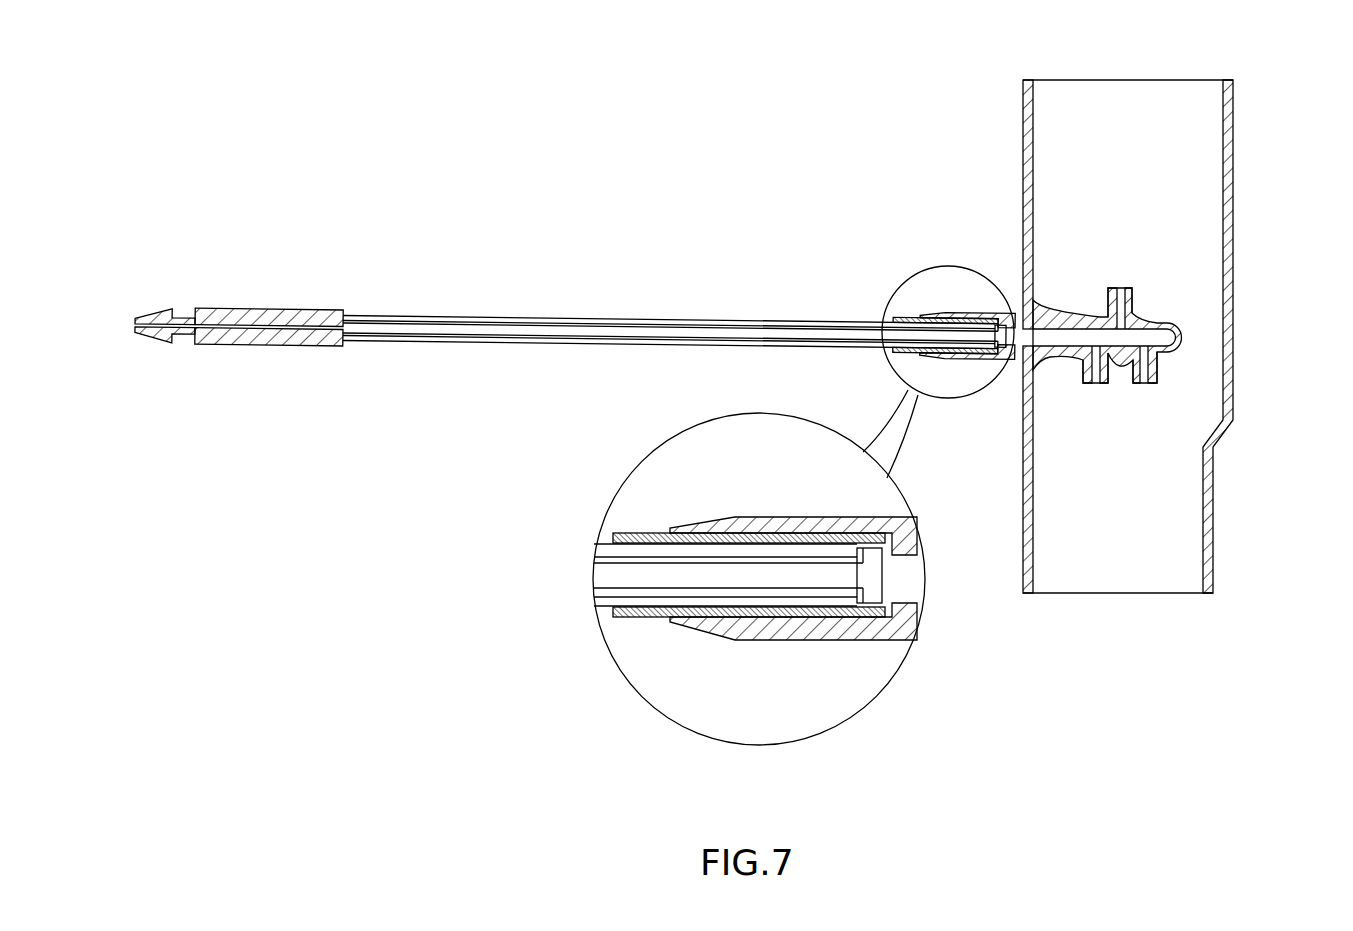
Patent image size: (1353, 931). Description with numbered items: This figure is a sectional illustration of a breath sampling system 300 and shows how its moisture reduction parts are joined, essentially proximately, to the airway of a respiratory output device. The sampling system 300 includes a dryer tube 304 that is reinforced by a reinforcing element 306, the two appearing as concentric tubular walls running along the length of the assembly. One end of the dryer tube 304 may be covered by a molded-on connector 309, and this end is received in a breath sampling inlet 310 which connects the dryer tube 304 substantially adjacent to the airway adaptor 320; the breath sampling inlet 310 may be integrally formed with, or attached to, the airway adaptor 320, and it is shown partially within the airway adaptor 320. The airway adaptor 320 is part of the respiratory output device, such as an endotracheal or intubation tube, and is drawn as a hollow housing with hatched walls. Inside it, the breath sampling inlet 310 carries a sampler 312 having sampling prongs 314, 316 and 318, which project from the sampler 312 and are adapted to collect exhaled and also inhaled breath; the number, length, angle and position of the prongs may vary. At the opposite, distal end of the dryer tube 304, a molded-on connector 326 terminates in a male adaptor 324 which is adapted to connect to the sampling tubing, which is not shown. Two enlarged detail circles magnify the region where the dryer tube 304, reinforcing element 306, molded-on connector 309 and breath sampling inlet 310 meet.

The sampling system 300 is at (725, 115).
The dryer tube 304 is at (598, 575).
The reinforcing element 306 is at (605, 550).
The molded-on connector 309 is at (905, 317).
The breath sampling inlet 310 is at (962, 309).
The sampler 312 is at (1180, 333).
The sampling prong 314 is at (1118, 292).
The sampling prong 316 is at (1143, 370).
The sampling prong 318 is at (1095, 372).
The airway adaptor 320 is at (1258, 192).
The male adaptor 324 is at (153, 308).
The molded-on connector 326 is at (250, 295).